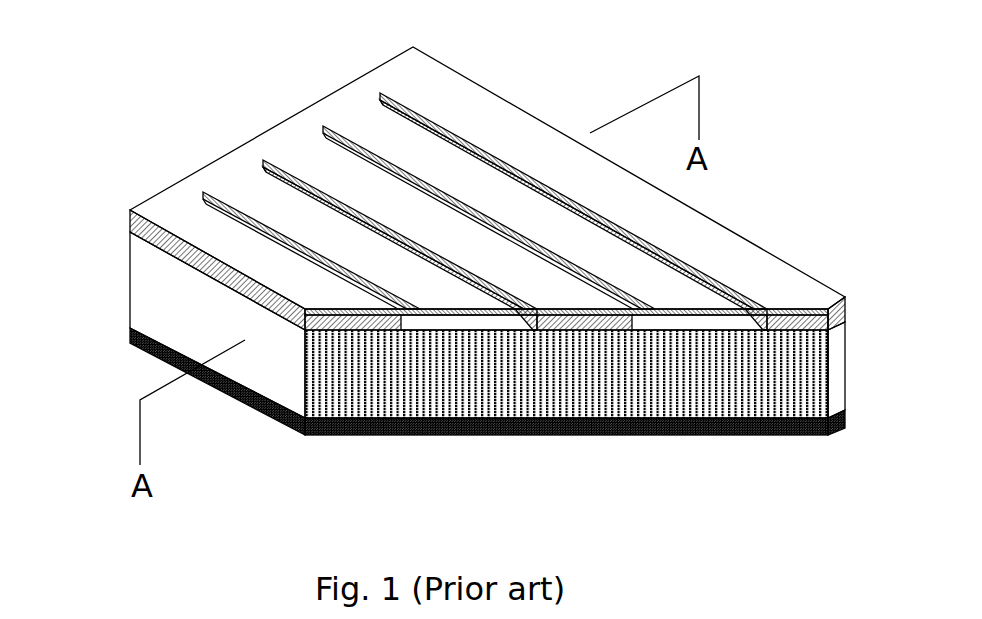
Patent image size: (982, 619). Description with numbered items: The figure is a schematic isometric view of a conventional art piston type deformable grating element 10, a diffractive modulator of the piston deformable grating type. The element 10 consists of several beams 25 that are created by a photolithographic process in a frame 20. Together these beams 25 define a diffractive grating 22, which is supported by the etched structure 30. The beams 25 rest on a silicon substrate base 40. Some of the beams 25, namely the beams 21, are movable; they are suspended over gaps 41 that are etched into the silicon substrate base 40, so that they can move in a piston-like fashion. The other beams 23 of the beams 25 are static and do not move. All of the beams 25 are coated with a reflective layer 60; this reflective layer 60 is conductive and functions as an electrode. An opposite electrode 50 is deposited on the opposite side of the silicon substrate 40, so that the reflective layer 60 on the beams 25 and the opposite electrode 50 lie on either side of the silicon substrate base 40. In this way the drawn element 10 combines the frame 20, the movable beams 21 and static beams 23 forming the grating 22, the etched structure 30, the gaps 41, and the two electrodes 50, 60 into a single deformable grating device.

The piston type deformable grating element 10 is at (172, 155).
The frame 20 is at (767, 278).
The movable beams 21 is at (320, 230).
The diffractive grating 22 is at (392, 205).
The static beams 23 is at (318, 288).
The beams 25 is at (228, 243).
The etched structure 30 is at (247, 298).
The silicon substrate base 40 is at (155, 292).
The gaps 41 is at (703, 320).
The opposite electrode 50 is at (128, 342).
The reflective layer 60 is at (129, 212).